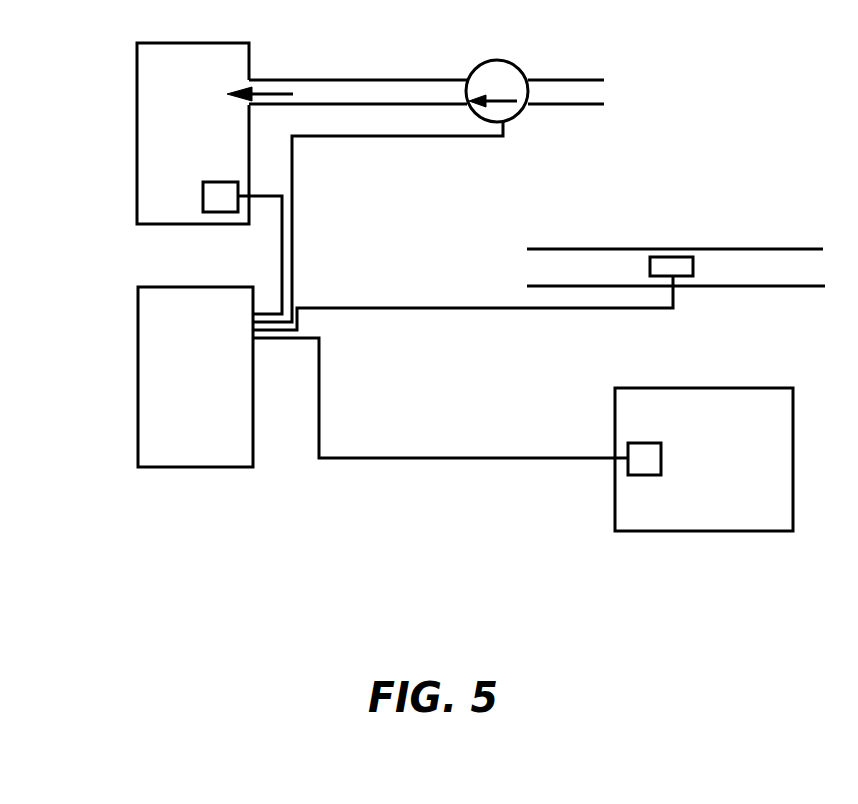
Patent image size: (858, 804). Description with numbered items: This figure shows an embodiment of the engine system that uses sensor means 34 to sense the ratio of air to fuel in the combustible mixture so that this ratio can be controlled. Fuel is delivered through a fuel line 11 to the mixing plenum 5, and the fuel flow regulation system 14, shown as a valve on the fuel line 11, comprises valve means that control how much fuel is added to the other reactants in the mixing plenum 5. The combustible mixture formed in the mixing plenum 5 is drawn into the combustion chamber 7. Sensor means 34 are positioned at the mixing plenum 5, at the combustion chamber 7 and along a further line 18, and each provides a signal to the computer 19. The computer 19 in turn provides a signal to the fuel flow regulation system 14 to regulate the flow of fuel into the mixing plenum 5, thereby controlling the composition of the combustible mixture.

The mixing plenum 5 is at (193, 133).
The combustion chamber 7 is at (704, 459).
The fuel line 11 is at (340, 77).
The fuel flow regulation system 14 is at (518, 58).
The pipeline 18 is at (567, 245).
The computer 19 is at (405, 371).
The sensor means 34 is at (199, 199).